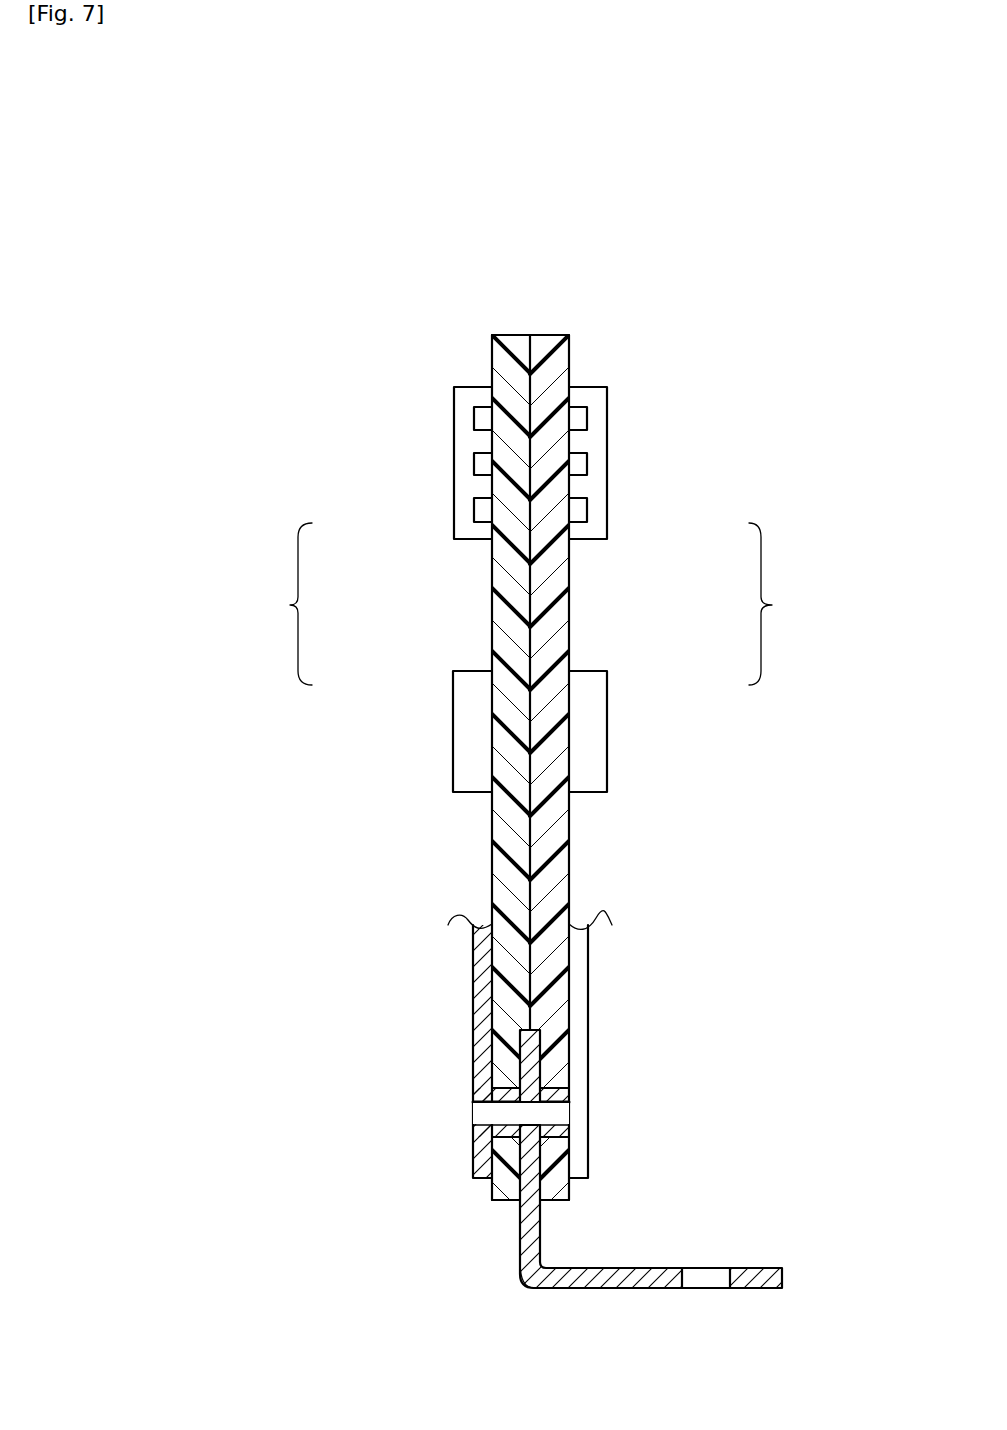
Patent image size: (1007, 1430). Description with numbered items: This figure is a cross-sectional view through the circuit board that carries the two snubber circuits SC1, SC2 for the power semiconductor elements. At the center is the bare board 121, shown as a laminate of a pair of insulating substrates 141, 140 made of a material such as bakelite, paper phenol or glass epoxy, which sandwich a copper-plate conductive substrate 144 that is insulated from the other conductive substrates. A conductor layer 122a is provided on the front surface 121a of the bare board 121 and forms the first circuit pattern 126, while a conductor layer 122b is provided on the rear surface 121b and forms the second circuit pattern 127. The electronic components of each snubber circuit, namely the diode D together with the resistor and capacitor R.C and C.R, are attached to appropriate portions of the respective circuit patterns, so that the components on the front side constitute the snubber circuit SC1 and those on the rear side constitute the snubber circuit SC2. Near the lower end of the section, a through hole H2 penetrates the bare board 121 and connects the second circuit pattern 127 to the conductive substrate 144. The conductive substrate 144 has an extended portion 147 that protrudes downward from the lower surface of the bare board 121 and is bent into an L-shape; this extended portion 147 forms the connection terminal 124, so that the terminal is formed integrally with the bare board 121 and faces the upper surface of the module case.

The bare board 121 is at (612, 221).
The insulating substrate 141 is at (517, 336).
The insulating substrate 140 is at (555, 336).
The front surface 121a is at (569, 604).
The rear surface 121b is at (492, 605).
The conductor layer 122a is at (588, 1007).
The first circuit pattern 126 is at (590, 1044).
The conductor layer 122b is at (473, 996).
The second circuit pattern 127 is at (508, 1046).
The through hole H2 is at (497, 1120).
The conductive substrate 144 is at (523, 1287).
The connection terminal 124 is at (757, 1289).
The extended portion 147 is at (651, 1159).
The diode D is at (453, 486).
The resistor and capacitor R.C is at (453, 723).
The capacitor and resistor C.R is at (607, 722).
The snubber circuit SC1 is at (785, 604).
The snubber circuit SC2 is at (277, 604).